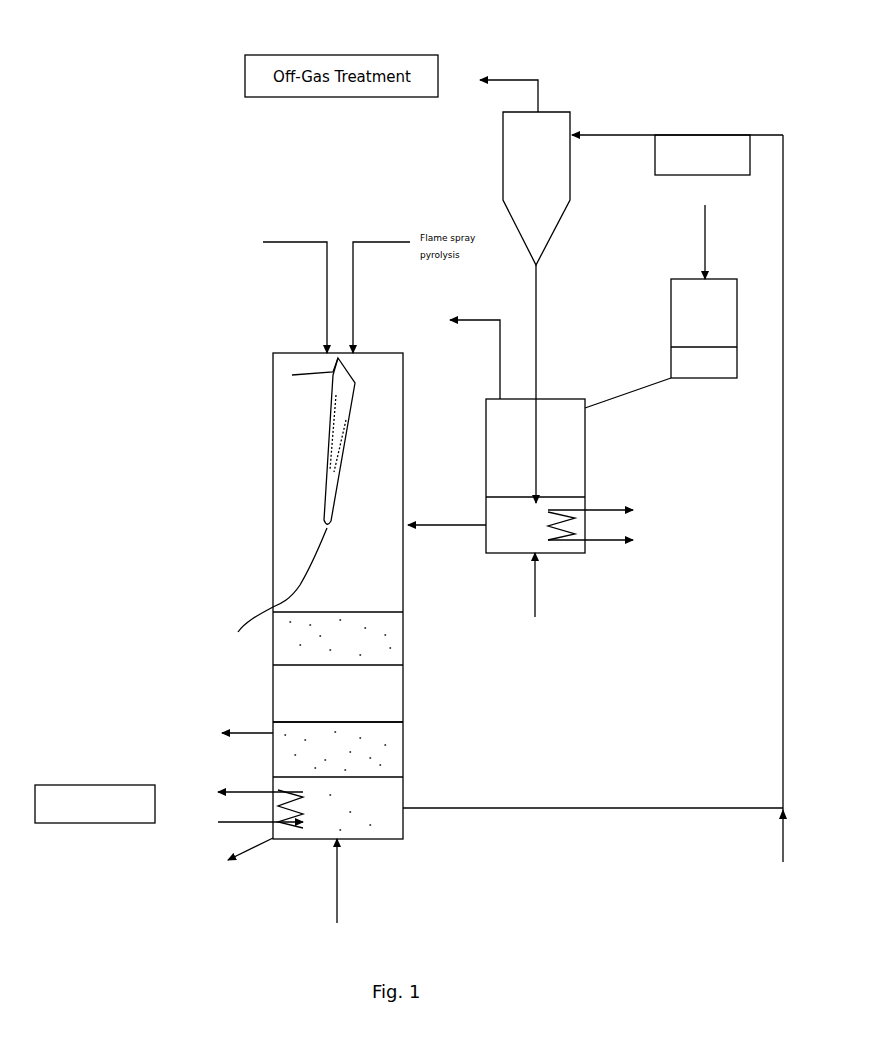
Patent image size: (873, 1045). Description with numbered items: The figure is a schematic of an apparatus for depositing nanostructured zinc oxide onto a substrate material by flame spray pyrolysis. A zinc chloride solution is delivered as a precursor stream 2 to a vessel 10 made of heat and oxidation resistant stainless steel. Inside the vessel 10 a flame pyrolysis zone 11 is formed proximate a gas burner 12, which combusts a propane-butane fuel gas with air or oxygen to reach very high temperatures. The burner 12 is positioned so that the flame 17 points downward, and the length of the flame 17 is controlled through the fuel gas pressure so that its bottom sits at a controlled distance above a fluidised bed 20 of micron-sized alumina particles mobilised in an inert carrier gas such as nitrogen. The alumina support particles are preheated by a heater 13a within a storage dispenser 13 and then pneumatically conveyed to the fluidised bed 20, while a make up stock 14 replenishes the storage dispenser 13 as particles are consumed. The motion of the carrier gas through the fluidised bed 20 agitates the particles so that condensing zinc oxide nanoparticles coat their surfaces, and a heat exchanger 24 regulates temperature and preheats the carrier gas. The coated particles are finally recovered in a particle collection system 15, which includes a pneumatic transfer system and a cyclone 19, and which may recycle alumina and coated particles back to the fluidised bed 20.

The precursor stream 2 is at (288, 243).
The vessel 10 is at (252, 537).
The flame pyrolysis zone 11 is at (353, 441).
The gas burner 12 is at (292, 375).
The storage dispenser 13 is at (597, 467).
The heater 13a is at (617, 548).
The make up stock 14 is at (707, 388).
The particle collection system 15 is at (651, 113).
The flame 17 is at (273, 593).
The cyclone 19 is at (572, 106).
The fluidised bed 20 is at (406, 720).
The heat exchanger 24 is at (205, 830).